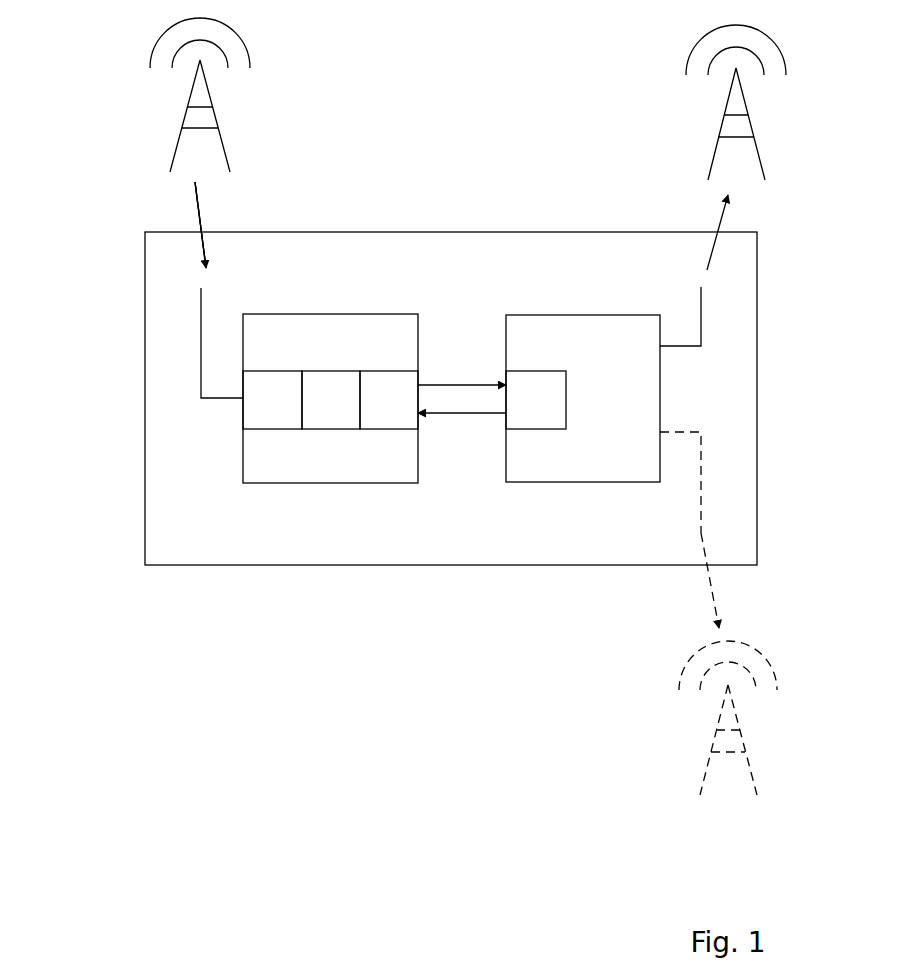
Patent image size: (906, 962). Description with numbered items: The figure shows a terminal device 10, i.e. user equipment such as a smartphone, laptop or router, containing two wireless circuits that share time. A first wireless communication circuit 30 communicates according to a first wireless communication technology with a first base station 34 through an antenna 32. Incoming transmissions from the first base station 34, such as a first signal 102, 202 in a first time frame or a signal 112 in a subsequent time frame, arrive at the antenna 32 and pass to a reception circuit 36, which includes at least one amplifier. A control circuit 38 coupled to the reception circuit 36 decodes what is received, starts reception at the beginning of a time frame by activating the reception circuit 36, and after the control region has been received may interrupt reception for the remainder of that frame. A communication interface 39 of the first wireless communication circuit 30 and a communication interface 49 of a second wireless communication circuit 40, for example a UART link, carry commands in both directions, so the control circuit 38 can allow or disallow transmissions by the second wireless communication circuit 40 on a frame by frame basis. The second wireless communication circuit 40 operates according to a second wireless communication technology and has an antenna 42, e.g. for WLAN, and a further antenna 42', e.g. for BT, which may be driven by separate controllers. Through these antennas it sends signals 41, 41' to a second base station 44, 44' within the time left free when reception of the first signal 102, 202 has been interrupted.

The terminal device 10 is at (200, 541).
The first wireless communication circuit 30 is at (267, 350).
The antenna 32 is at (200, 350).
The first base station 34 is at (177, 153).
The reception circuit 36 is at (257, 412).
The control circuit 38 is at (313, 412).
The communication interface 39 is at (374, 412).
The second wireless communication circuit 40 is at (590, 412).
The signal 41 is at (782, 237).
The signal 41' is at (776, 581).
The antenna 42 is at (735, 331).
The further antenna 42' is at (736, 482).
The second base station 44 is at (767, 102).
The second base station 44' is at (770, 718).
The communication interface 49 is at (522, 412).
The first signal 102 is at (198, 220).
The signal 112 is at (198, 222).
The first signal 202 is at (197, 222).